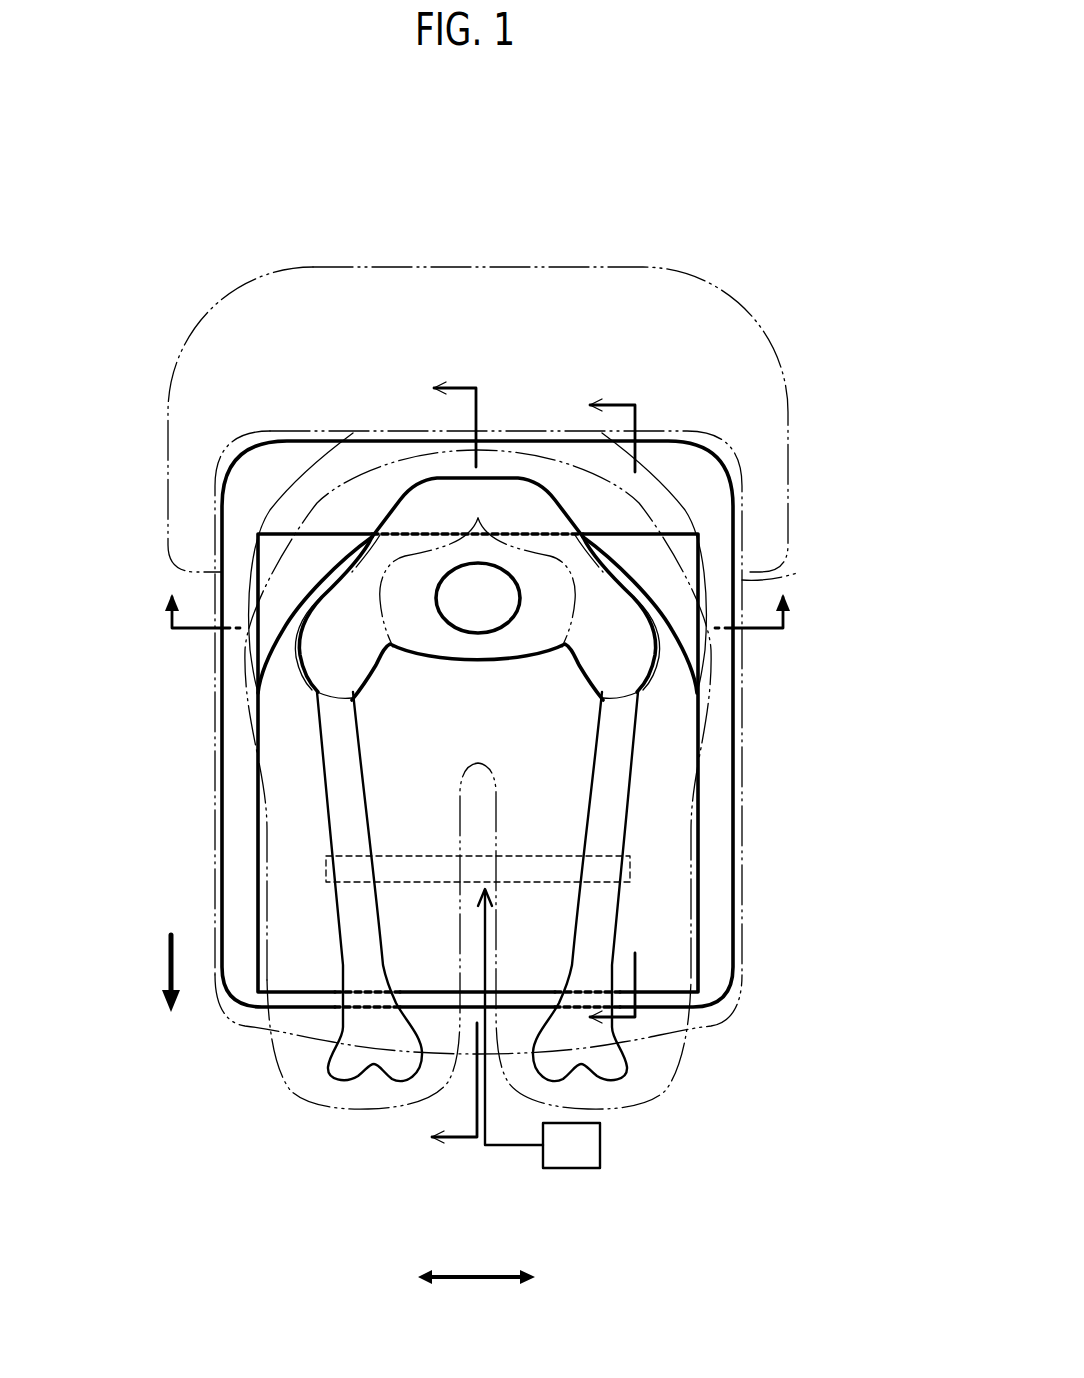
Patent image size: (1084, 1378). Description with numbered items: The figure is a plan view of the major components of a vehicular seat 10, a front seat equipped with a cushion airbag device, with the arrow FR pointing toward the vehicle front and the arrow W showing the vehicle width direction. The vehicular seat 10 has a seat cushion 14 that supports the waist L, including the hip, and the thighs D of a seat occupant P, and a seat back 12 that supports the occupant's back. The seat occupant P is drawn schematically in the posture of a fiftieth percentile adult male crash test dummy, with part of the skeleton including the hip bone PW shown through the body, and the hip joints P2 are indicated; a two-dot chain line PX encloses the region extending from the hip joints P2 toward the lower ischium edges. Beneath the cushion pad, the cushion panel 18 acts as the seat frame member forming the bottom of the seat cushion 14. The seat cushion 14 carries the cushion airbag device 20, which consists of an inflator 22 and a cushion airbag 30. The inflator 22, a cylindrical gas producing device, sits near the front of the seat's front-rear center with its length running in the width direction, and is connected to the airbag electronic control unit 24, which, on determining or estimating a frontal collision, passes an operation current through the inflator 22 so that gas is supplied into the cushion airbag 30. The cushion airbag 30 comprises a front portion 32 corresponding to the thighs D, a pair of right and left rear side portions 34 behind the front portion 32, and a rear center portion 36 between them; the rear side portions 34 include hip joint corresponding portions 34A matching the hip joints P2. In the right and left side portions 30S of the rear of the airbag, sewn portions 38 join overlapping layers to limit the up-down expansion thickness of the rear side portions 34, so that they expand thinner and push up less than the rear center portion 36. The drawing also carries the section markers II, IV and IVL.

The vehicular seat 10 is at (790, 1011).
The seat back 12 is at (788, 437).
The seat cushion 14 is at (745, 835).
The cushion panel 18 is at (738, 918).
The cushion airbag device 20 is at (714, 758).
The inflator 22 is at (383, 855).
The airbag electronic control unit 24 is at (571, 1170).
The cushion airbag 30 is at (702, 802).
The right and left side portions 30S is at (297, 583).
The front portion 32 is at (295, 853).
The rear side portions 34 is at (374, 630).
The hip joint corresponding portions 34A is at (335, 640).
The rear center portion 36 is at (486, 650).
The sewn portions 38 is at (292, 608).
The seat occupant P is at (358, 465).
The hip joints P2 is at (350, 640).
The two-dot chain line PX is at (478, 565).
The hip bone PW is at (514, 498).
The thighs D is at (280, 833).
The waist L is at (781, 571).
The arrow W is at (478, 1272).
The arrow FR is at (172, 993).
The section line II is at (170, 627).
The section line IV is at (464, 385).
The section line IVL is at (618, 403).